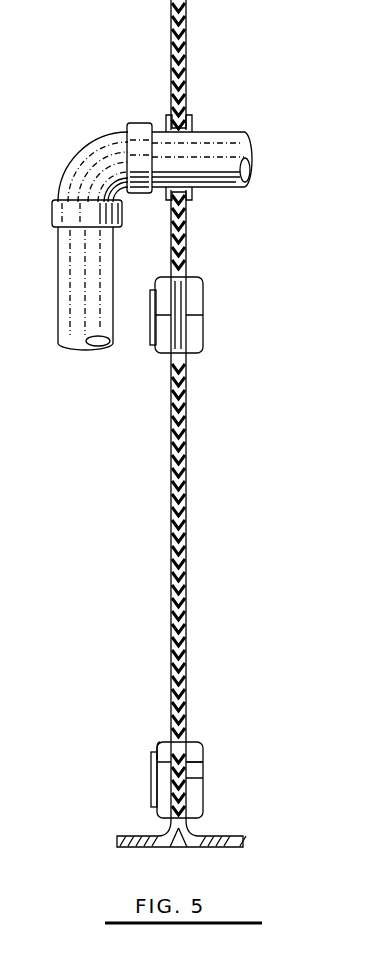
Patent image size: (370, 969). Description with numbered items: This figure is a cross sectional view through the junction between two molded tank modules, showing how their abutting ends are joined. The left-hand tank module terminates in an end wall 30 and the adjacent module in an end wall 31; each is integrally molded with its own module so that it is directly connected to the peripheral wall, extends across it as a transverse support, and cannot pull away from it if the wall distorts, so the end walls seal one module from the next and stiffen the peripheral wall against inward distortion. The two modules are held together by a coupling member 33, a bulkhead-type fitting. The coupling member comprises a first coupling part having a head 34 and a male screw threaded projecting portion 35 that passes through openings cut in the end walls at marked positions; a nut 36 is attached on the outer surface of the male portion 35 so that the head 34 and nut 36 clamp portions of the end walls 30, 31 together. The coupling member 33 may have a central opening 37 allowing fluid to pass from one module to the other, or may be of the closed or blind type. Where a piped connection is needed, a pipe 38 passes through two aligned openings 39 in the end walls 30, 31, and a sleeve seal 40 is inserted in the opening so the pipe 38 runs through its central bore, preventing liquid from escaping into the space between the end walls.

The end wall 30 is at (171, 506).
The end wall 31 is at (186, 510).
The coupling member 33 is at (209, 312).
The head 34 is at (203, 746).
The male screw threaded projecting portion 35 is at (150, 797).
The nut 36 is at (157, 747).
The central opening 37 is at (205, 766).
The pipe 38 is at (222, 187).
The aligned openings 39 is at (195, 128).
The sleeve seal 40 is at (194, 118).